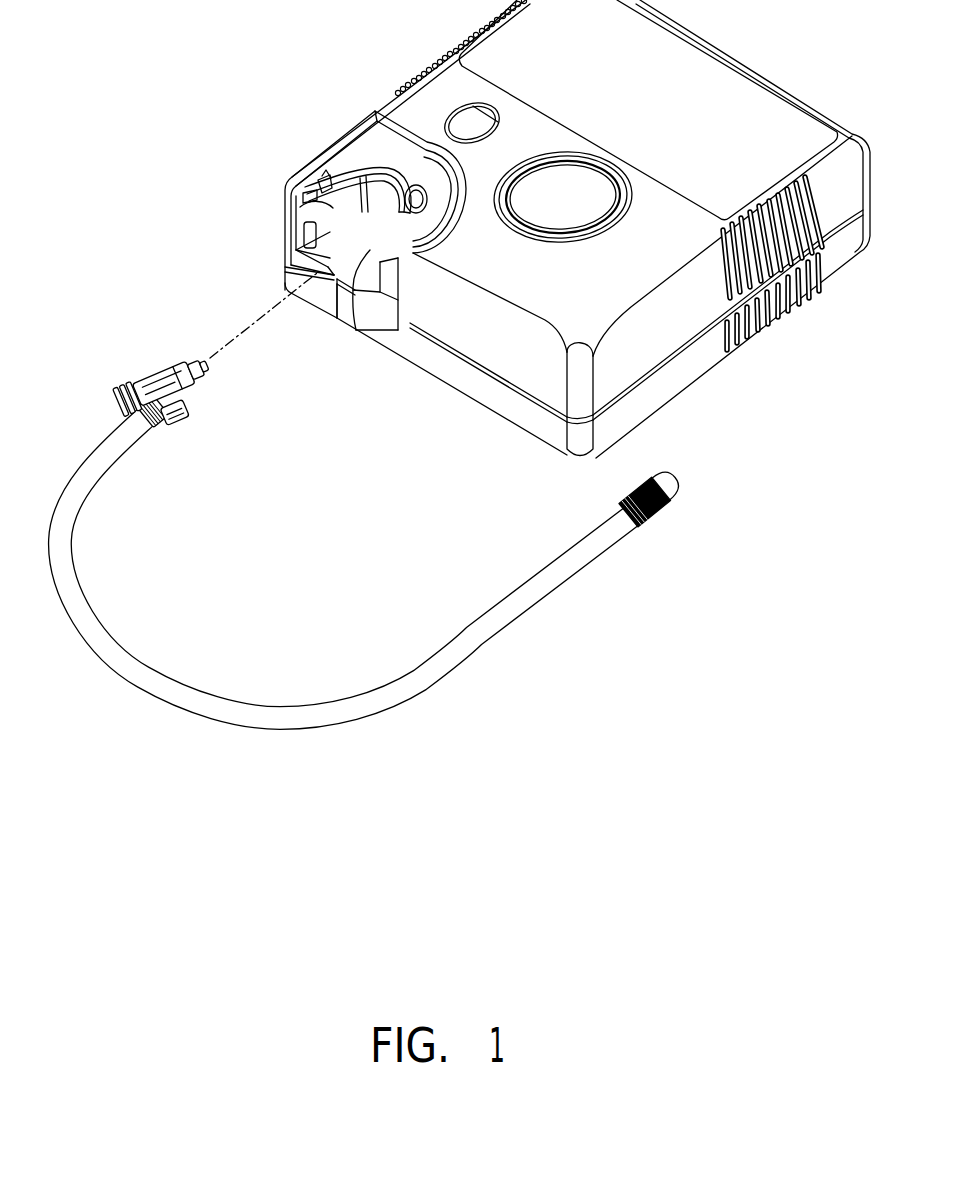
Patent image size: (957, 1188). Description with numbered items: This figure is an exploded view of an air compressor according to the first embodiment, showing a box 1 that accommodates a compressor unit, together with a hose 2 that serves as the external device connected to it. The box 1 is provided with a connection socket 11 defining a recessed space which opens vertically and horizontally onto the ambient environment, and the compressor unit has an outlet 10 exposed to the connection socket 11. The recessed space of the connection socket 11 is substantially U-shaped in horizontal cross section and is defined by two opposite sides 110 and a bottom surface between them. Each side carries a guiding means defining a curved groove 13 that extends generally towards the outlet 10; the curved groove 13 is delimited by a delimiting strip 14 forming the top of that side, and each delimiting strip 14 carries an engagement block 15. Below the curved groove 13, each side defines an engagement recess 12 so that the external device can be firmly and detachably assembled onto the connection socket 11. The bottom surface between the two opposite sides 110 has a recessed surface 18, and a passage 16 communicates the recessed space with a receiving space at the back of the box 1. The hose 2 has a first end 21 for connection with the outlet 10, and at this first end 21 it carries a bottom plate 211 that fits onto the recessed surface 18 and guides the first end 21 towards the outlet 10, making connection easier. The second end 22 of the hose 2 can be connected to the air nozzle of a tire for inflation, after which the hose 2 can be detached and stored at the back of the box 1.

The box 1 is at (685, 363).
The outlet 10 is at (368, 200).
The opposite sides 110 is at (362, 193).
The connection socket 11 is at (327, 249).
The engagement recess 12 is at (312, 236).
The curved groove 13 is at (320, 204).
The delimiting strip 14 is at (325, 184).
The engagement block 15 is at (310, 193).
The passage 16 is at (357, 325).
The recessed surface 18 is at (396, 262).
The hose 2 is at (485, 626).
The first end 21 is at (148, 376).
The bottom plate 211 is at (180, 422).
The second end 22 is at (675, 500).